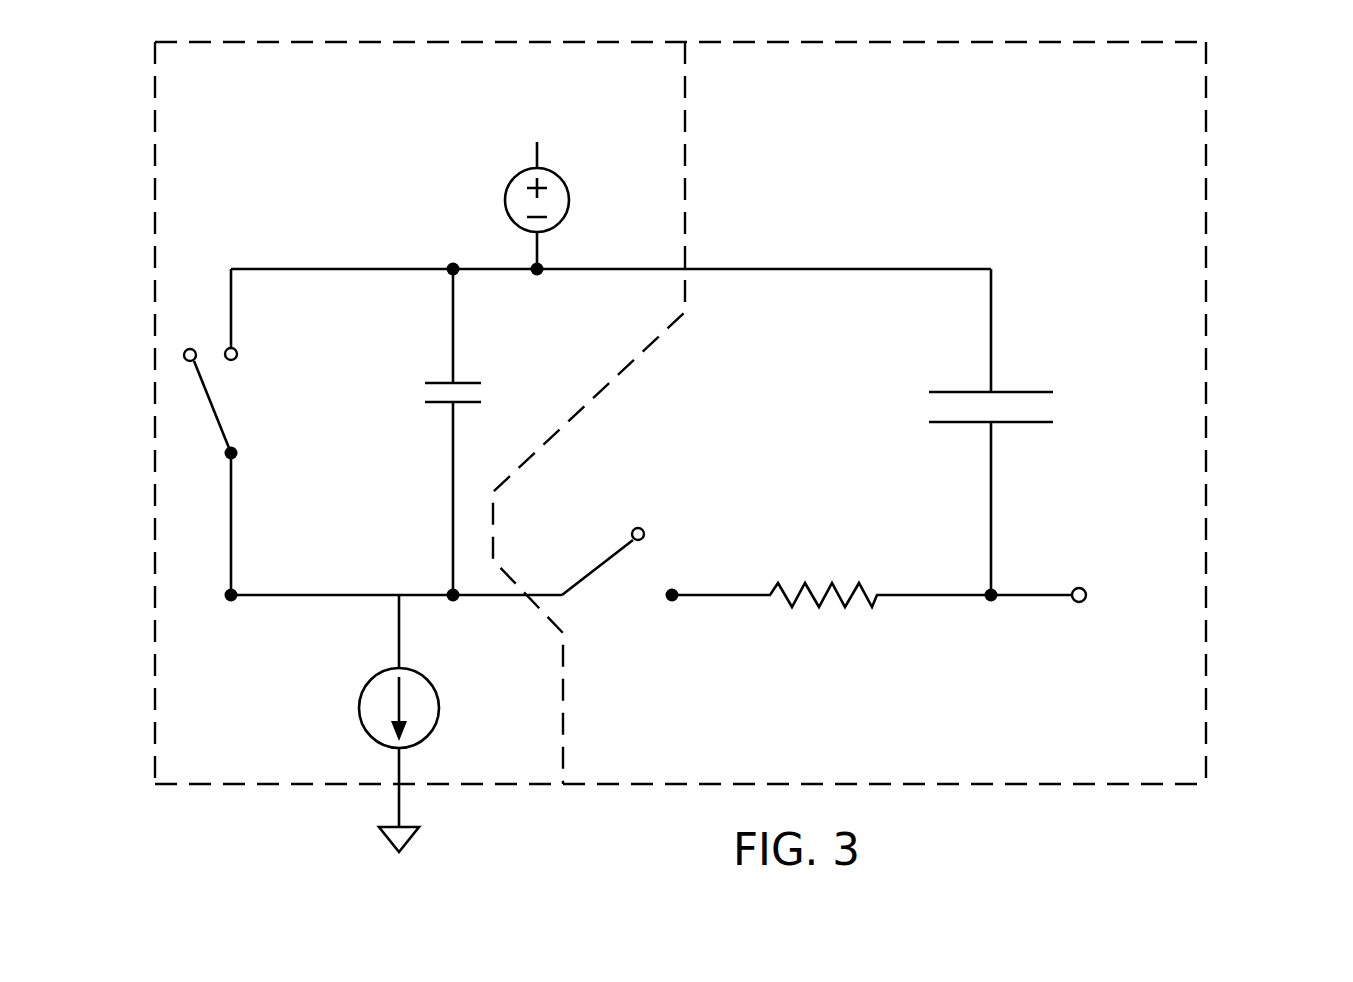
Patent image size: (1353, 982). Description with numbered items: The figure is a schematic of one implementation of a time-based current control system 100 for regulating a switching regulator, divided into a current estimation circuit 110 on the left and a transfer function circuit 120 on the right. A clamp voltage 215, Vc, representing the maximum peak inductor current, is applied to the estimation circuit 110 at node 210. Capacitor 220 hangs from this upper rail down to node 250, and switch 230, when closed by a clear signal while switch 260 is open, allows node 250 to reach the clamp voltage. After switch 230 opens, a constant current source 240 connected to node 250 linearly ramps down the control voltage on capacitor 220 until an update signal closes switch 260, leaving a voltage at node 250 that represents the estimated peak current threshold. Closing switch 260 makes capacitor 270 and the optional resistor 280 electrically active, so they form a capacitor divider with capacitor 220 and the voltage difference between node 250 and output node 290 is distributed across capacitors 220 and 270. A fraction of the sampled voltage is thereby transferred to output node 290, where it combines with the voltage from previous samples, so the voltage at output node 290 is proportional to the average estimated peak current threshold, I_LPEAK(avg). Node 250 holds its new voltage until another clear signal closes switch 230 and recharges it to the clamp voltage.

The time-based current control system 100 is at (1352, 85).
The current estimation circuit 110 is at (155, 180).
The transfer function circuit 120 is at (1206, 356).
The node 210 is at (541, 267).
The clamp voltage 215 is at (548, 170).
The capacitor 220 is at (470, 382).
The switch 230 is at (215, 408).
The constant current source 240 is at (427, 676).
The node 250 is at (447, 593).
The switch 260 is at (600, 568).
The capacitor 270 is at (1020, 390).
The resistor 280 is at (832, 602).
The output node 290 is at (1085, 582).